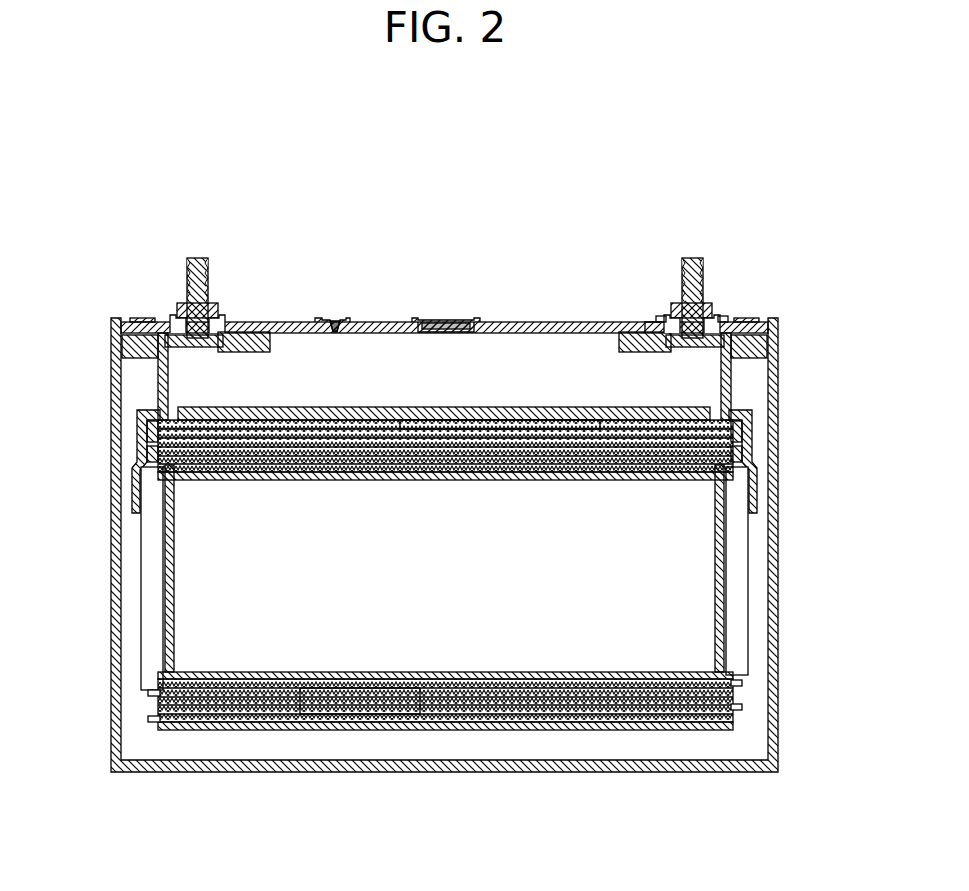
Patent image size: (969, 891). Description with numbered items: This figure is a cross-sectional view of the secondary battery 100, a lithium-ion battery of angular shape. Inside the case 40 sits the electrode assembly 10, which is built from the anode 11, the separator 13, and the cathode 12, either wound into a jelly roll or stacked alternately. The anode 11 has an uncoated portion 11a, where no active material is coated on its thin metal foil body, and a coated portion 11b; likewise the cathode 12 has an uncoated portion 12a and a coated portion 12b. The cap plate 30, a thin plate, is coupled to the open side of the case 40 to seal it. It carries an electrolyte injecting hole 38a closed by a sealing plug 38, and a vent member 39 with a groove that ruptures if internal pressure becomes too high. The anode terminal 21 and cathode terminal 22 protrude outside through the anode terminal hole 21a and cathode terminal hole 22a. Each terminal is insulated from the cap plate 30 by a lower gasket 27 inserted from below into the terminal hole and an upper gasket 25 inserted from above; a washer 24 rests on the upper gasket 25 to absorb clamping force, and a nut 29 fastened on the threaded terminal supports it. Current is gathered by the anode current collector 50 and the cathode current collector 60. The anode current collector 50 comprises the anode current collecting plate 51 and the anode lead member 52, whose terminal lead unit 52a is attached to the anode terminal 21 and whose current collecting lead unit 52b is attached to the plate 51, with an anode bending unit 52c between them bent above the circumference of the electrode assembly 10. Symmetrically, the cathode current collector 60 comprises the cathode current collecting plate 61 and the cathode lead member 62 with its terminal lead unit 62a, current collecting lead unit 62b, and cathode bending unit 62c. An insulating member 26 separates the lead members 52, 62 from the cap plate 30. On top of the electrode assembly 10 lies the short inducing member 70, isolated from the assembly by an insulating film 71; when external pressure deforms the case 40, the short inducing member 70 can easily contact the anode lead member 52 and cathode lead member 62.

The secondary battery 100 is at (466, 164).
The electrode assembly 10 is at (450, 581).
The anode 11 is at (238, 843).
The uncoated portion 11a is at (148, 697).
The coated portion 11b is at (224, 722).
The cathode 12 is at (755, 843).
The uncoated portion 12a is at (742, 710).
The coated portion 12b is at (678, 728).
The separator 13 is at (345, 722).
The anode terminal 21 is at (197, 258).
The anode terminal hole 21a is at (218, 316).
The cathode terminal 22 is at (690, 258).
The cathode terminal hole 22a is at (673, 318).
The washer 24 is at (662, 318).
The upper gasket 25 is at (720, 318).
The insulating member 26 is at (262, 335).
The lower gasket 27 is at (653, 324).
The nut 29 is at (182, 310).
The cap plate 30 is at (400, 322).
The sealing plug 38 is at (328, 320).
The electrolyte injecting hole 38a is at (340, 320).
The vent member 39 is at (432, 320).
The case 40 is at (776, 656).
The anode current collector 50 is at (46, 490).
The anode current collecting plate 51 is at (130, 612).
The anode lead member 52 is at (128, 455).
The terminal lead unit 52a is at (122, 350).
The current collecting lead unit 52b is at (145, 440).
The anode bending unit 52c is at (148, 414).
The cathode current collector 60 is at (843, 490).
The cathode current collecting plate 61 is at (760, 612).
The cathode lead member 62 is at (761, 455).
The terminal lead unit 62a is at (760, 352).
The current collecting lead unit 62b is at (744, 440).
The cathode bending unit 62c is at (741, 414).
The short inducing member 70 is at (547, 418).
The insulating film 71 is at (502, 428).